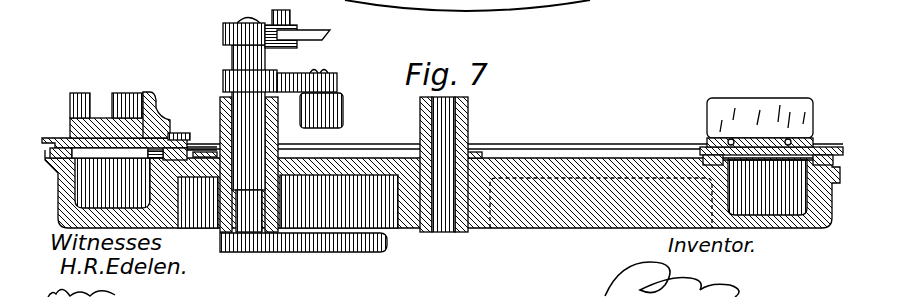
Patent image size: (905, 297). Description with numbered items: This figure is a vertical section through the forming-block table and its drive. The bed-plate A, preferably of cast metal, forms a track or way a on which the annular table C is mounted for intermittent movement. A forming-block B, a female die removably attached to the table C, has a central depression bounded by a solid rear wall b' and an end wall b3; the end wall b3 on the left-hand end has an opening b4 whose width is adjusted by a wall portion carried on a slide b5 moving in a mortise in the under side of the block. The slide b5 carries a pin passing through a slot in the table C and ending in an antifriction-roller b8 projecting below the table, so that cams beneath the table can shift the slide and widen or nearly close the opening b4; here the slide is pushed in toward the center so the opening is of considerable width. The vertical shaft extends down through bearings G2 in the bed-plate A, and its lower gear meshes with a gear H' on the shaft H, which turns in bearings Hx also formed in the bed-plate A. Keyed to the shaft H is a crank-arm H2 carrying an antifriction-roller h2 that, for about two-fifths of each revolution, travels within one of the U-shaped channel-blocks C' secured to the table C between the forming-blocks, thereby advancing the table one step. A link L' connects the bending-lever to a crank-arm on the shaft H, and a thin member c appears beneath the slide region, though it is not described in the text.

The bed-plate A is at (66, 180).
The track or way a is at (50, 165).
The forming-block B is at (70, 126).
The rear wall b' is at (158, 101).
The end wall b3 is at (129, 98).
The opening b4 is at (100, 104).
The slide b5 is at (178, 130).
The antifriction-roller b8 is at (128, 185).
The thin plate c is at (202, 132).
The annular table C is at (778, 165).
The channel-block C' is at (760, 108).
The bearings G2 is at (468, 137).
The shaft H is at (249, 116).
The bearings Hx is at (222, 103).
The gear H' is at (303, 254).
The crank-arm H2 is at (295, 72).
The antifriction-roller h2 is at (343, 108).
The link L' is at (297, 25).